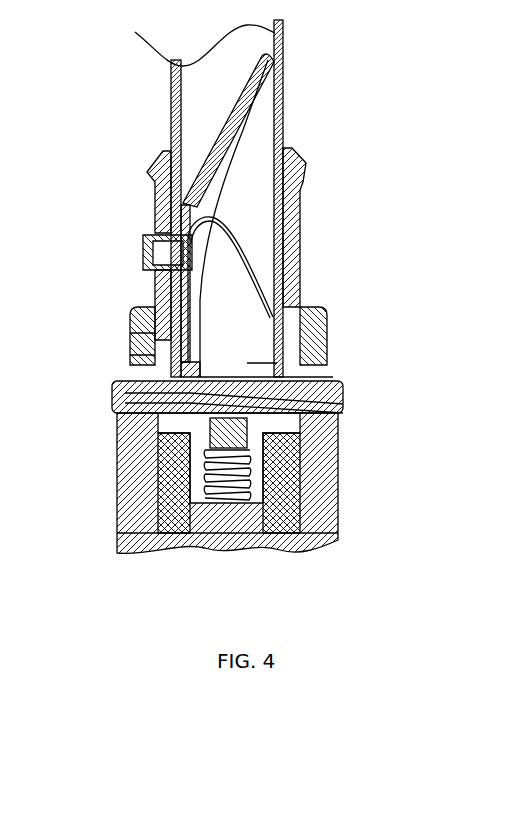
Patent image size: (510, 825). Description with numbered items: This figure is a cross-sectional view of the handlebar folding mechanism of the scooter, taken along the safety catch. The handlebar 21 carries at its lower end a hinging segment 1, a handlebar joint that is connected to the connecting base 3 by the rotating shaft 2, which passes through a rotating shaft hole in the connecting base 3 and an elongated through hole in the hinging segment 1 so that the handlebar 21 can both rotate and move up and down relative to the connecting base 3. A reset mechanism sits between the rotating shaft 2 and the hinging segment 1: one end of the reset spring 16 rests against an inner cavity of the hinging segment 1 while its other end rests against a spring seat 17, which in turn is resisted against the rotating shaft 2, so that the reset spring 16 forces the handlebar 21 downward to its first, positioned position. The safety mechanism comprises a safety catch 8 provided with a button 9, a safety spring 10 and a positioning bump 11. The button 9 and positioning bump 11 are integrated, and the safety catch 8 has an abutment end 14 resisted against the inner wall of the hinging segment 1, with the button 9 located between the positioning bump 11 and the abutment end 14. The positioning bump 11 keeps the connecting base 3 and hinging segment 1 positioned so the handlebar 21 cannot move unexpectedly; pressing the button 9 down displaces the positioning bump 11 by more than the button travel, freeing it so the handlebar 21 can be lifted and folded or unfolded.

The hinging segment 1 is at (152, 287).
The rotating shaft 2 is at (343, 390).
The connecting base 3 is at (118, 481).
The safety catch 8 is at (150, 183).
The button 9 is at (141, 247).
The safety spring 10 is at (247, 257).
The positioning bump 11 is at (133, 337).
The abutment end 14 is at (283, 63).
The reset spring 16 is at (265, 469).
The spring seat 17 is at (263, 435).
The handlebar 21 is at (283, 110).